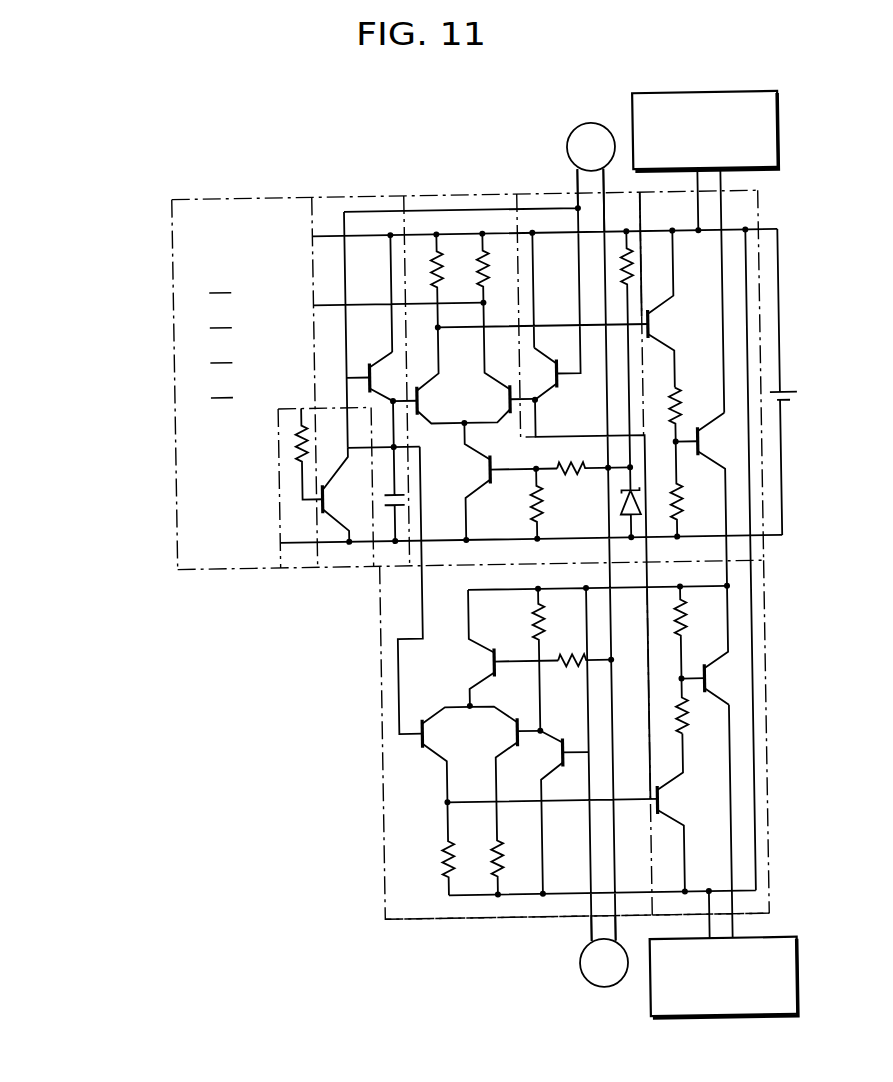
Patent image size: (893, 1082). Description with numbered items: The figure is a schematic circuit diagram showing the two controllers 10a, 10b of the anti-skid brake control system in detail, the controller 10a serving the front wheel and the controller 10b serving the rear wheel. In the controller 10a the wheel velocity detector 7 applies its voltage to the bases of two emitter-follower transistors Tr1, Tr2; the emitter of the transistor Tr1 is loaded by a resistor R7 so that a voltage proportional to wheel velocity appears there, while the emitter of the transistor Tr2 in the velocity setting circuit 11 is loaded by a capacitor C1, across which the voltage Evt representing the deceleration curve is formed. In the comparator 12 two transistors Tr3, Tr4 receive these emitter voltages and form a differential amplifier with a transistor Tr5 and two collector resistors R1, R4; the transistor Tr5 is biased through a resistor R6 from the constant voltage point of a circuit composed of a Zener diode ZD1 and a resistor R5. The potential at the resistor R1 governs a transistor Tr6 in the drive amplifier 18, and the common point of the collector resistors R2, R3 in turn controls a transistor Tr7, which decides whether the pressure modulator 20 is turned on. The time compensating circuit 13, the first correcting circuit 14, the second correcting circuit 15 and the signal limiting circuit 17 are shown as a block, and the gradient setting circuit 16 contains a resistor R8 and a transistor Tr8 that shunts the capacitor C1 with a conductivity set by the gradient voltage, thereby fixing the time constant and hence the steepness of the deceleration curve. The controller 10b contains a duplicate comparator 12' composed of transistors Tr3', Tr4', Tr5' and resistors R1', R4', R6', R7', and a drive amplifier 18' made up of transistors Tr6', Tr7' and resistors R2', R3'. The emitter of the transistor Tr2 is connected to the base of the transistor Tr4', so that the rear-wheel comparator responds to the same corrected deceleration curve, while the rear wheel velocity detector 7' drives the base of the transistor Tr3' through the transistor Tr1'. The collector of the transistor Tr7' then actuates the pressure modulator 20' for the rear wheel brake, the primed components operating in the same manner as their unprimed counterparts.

The wheel velocity detector 7 is at (591, 157).
The wheel velocity detector 7' is at (606, 966).
The controller 10a is at (281, 194).
The controller 10b is at (372, 769).
The velocity setting circuit 11 is at (365, 199).
The comparator 12 is at (434, 358).
The comparator 12' is at (577, 938).
The time compensating circuit 13 is at (190, 211).
The first correcting circuit 14 is at (188, 307).
The second correcting circuit 15 is at (188, 409).
The gradient setting circuit 16 is at (323, 559).
The signal limiting circuit 17 is at (185, 507).
The drive amplifier 18 is at (781, 367).
The drive amplifier 18' is at (789, 741).
The pressure modulator 20 is at (706, 231).
The pressure modulator 20' is at (722, 883).
The collector resistor R1 is at (425, 281).
The collector resistor R2 is at (692, 414).
The collector resistor R3 is at (696, 489).
The collector resistor R4 is at (468, 269).
The resistor R5 is at (634, 250).
The resistor R6 is at (594, 486).
The resistor R7 is at (512, 504).
The resistor R8 is at (309, 449).
The resistor R1' is at (430, 849).
The resistor R2' is at (698, 716).
The resistor R3' is at (700, 632).
The resistor R4' is at (481, 848).
The resistor R6' is at (585, 682).
The resistor R7' is at (563, 659).
The capacitor C1 is at (388, 491).
The Zener diode ZD1 is at (616, 514).
The emitter-follower transistor Tr1 is at (557, 386).
The emitter-follower transistor Tr2 is at (380, 362).
The transistor Tr3 is at (498, 362).
The transistor Tr4 is at (428, 375).
The transistor Tr5 is at (495, 481).
The transistor Tr6 is at (674, 309).
The transistor Tr7 is at (710, 500).
The transistor Tr8 is at (321, 507).
The transistor Tr1' is at (551, 812).
The transistor Tr3' is at (506, 754).
The transistor Tr4' is at (447, 755).
The transistor Tr5' is at (497, 648).
The transistor Tr6' is at (685, 812).
The transistor Tr7' is at (714, 645).
The voltage representing the deceleration curve Evt is at (416, 580).